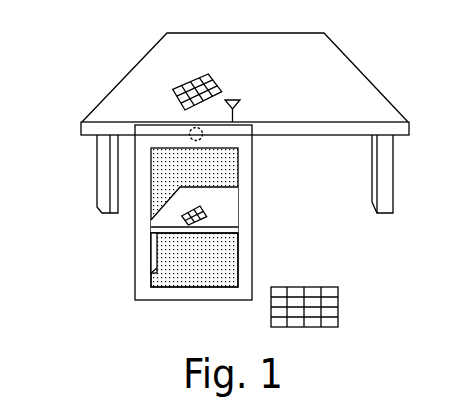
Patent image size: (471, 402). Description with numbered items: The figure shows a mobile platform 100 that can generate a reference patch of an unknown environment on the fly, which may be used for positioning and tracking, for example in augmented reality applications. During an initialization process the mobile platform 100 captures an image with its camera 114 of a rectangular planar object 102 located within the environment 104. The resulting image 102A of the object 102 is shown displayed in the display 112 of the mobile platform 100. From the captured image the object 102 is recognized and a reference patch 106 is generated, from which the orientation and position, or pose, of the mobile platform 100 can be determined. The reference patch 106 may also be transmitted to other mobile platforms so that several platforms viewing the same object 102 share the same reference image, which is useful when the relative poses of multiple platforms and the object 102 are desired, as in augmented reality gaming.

The mobile platform 100 is at (135, 278).
The rectangular planar object 102 is at (172, 90).
The image of the object 102A is at (151, 227).
The environment 104 is at (337, 59).
The reference patch 106 is at (308, 327).
The display 112 is at (237, 271).
The camera 114 is at (202, 136).